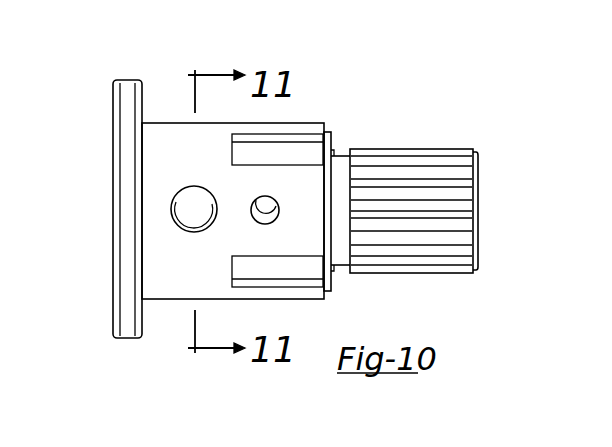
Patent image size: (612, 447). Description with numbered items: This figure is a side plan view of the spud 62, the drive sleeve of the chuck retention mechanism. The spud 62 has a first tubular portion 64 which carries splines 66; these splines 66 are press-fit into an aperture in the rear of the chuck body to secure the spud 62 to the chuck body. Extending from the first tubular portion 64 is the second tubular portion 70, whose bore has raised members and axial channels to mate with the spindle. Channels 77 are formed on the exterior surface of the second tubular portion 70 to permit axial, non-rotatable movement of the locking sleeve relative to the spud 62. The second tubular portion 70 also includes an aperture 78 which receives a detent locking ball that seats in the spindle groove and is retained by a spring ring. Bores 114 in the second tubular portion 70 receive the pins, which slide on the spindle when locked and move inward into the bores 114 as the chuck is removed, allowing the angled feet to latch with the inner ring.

The spud 62 is at (309, 84).
The first tubular portion 64 is at (445, 149).
The splines 66 is at (416, 253).
The second tubular portion 70 is at (173, 303).
The channels 77 is at (275, 263).
The aperture 78 is at (193, 230).
The bores 114 is at (276, 207).